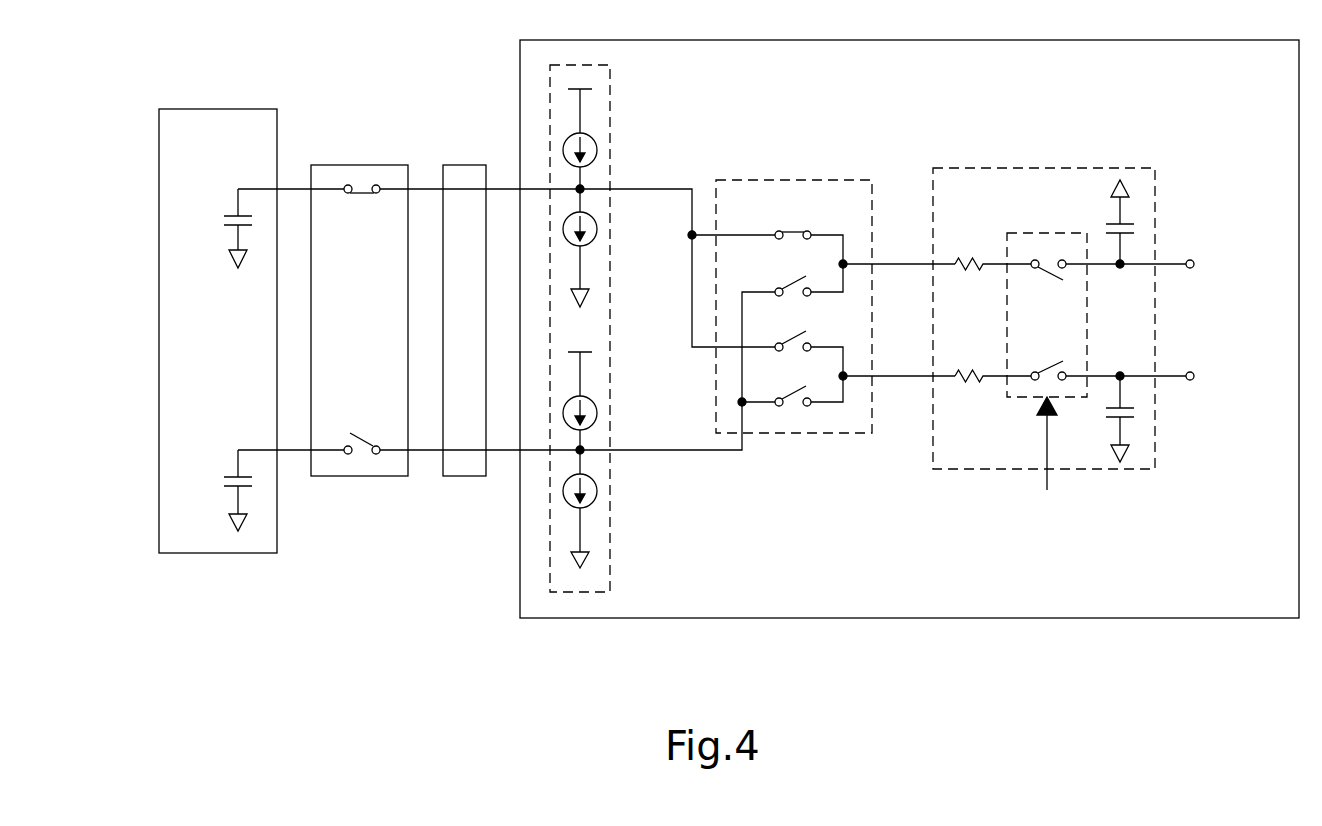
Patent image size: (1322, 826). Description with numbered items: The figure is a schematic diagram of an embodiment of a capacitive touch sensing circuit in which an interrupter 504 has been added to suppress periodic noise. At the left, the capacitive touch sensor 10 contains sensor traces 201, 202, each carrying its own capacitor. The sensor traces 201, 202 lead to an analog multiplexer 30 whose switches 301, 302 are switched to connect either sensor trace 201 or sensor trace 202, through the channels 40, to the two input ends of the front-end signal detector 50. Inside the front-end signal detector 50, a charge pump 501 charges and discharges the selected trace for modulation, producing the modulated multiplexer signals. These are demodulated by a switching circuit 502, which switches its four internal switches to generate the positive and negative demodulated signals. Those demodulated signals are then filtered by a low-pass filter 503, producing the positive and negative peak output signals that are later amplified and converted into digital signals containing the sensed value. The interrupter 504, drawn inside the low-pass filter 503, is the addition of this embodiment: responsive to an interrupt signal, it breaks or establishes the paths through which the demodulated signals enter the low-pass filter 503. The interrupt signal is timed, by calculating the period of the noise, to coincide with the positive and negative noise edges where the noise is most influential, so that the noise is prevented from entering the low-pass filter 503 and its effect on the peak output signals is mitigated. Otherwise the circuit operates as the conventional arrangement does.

The capacitive touch sensor 10 is at (159, 325).
The sensor trace 201 is at (238, 188).
The sensor trace 202 is at (238, 449).
The analog multiplexer 30 is at (360, 165).
The switch 301 is at (368, 210).
The switch 302 is at (368, 421).
The channels 40 is at (465, 165).
The front-end signal detector 50 is at (520, 532).
The charge pump 501 is at (610, 130).
The switching circuit 502 is at (800, 180).
The low-pass filter 503 is at (1063, 307).
The interrupter 504 is at (1043, 233).